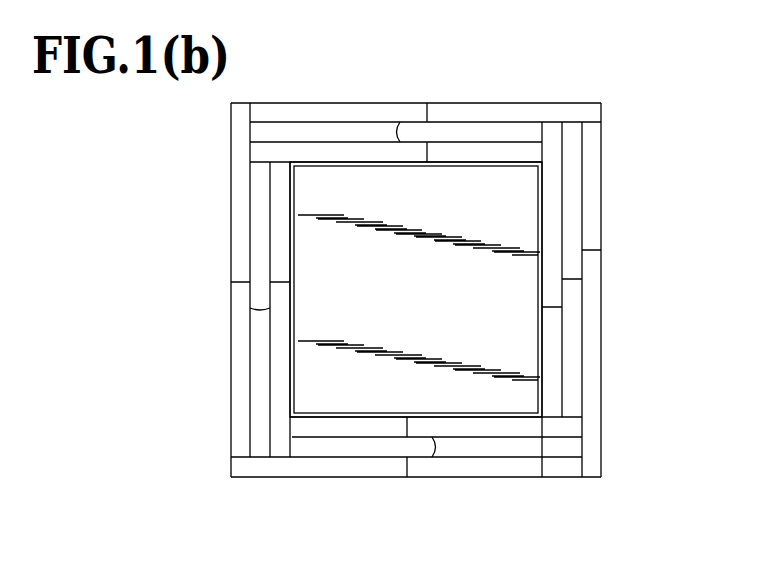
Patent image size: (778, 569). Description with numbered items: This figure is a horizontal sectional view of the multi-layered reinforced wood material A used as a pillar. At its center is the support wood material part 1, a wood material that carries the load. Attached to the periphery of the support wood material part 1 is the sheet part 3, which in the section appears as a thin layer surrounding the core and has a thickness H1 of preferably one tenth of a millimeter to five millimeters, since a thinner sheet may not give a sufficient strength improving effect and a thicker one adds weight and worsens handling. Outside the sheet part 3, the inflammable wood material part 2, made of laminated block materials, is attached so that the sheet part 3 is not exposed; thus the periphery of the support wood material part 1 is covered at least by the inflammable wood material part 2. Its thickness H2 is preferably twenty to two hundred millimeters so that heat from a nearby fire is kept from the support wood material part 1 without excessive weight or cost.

The support wood material part 1 is at (525, 237).
The inflammable wood material part 2 is at (601, 188).
The sheet part 3 is at (545, 382).
The multi-layered reinforced wood material A is at (457, 288).
The thickness of sheet part H1 is at (558, 333).
The thickness of inflammable wood material part H2 is at (542, 480).